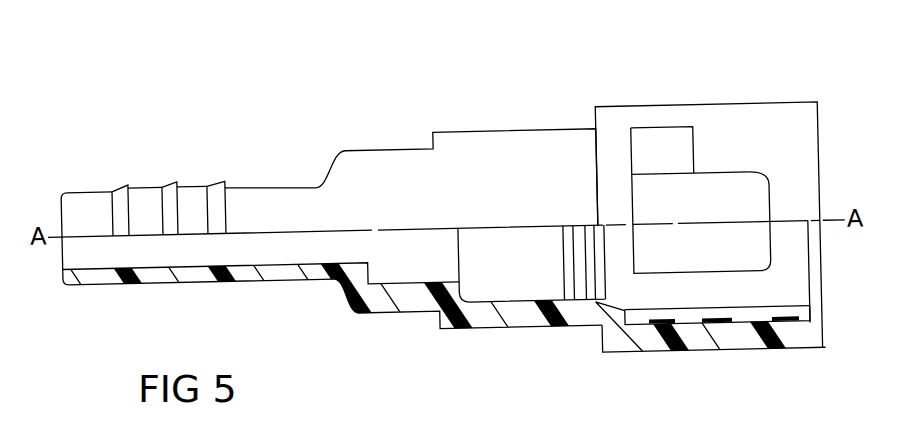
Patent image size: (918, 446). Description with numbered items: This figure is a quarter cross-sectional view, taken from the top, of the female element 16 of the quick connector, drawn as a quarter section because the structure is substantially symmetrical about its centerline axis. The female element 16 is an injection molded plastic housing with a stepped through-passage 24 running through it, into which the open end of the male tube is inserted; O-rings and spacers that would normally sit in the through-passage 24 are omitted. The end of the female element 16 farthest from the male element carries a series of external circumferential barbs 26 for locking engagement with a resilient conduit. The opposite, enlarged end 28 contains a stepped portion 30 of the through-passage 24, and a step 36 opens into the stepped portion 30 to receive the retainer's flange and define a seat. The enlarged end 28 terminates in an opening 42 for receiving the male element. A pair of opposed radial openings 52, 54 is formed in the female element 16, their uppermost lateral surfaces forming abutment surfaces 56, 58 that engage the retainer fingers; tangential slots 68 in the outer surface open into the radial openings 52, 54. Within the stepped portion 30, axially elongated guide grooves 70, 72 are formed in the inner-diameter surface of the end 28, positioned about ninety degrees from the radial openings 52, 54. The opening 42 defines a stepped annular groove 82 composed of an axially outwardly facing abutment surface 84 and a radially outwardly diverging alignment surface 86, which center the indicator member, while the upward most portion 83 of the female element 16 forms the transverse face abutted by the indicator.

The female element 16 is at (487, 126).
The stepped through-passage 24 is at (77, 257).
The external circumferential barbs 26 is at (222, 186).
The enlarged end 28 is at (764, 125).
The stepped portion 30 is at (693, 311).
The step 36 is at (627, 329).
The opening 42 is at (795, 324).
The radial opening 52 is at (728, 192).
The radial opening 54 is at (687, 286).
The abutment surface 56 is at (763, 207).
The abutment surface 58 is at (765, 248).
The tangential slots 68 is at (693, 161).
The guide groove 70 is at (737, 364).
The guide groove 72 is at (738, 334).
The stepped annular groove 82 is at (813, 277).
The upward most portion 83 is at (817, 365).
The abutment surface 84 is at (818, 340).
The alignment surface 86 is at (820, 347).